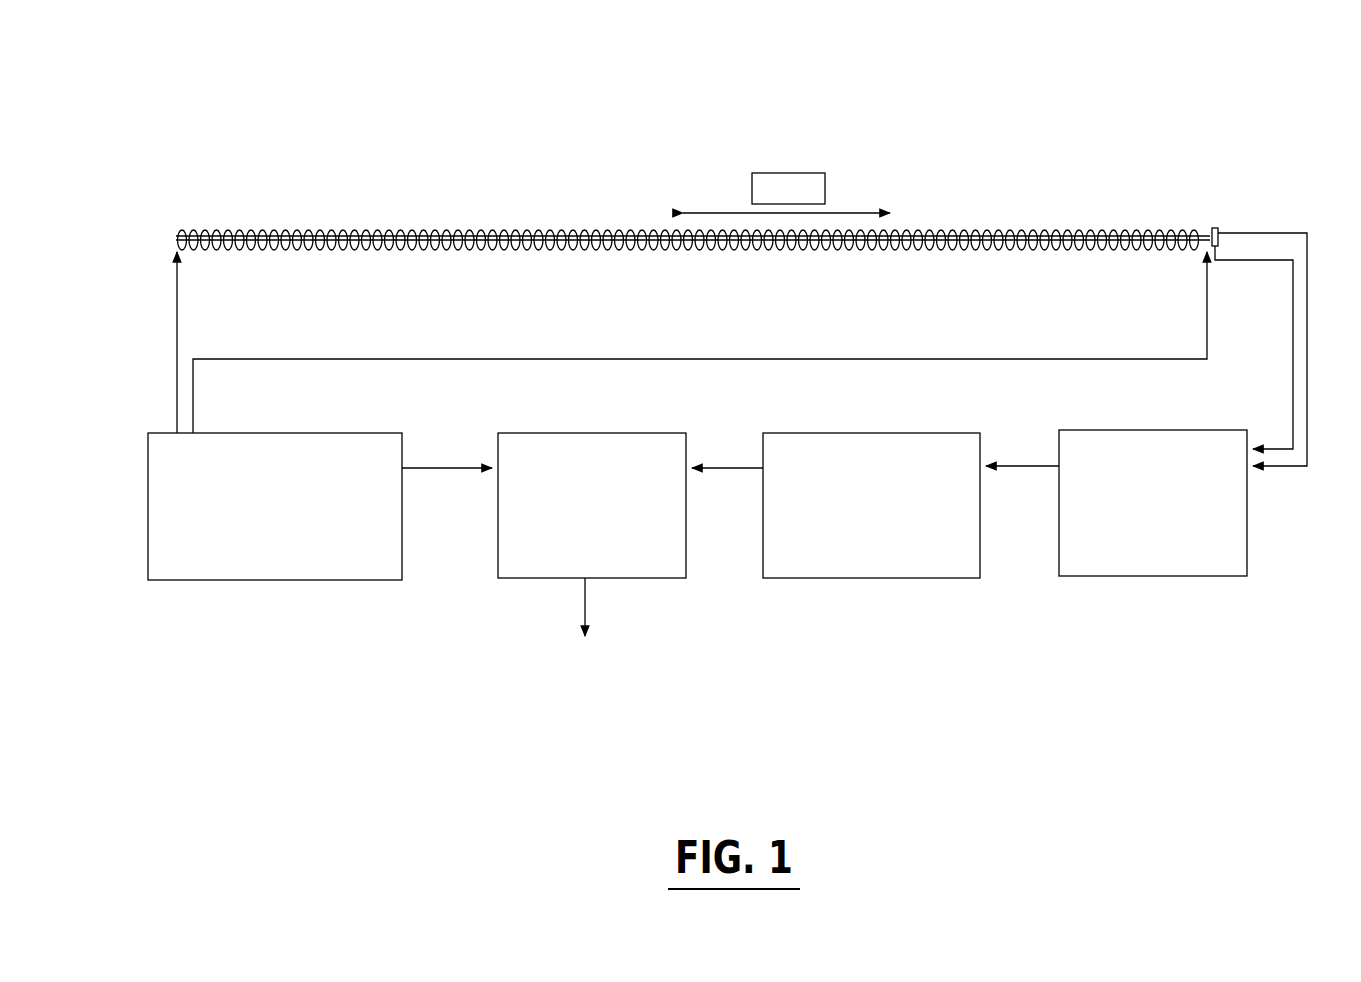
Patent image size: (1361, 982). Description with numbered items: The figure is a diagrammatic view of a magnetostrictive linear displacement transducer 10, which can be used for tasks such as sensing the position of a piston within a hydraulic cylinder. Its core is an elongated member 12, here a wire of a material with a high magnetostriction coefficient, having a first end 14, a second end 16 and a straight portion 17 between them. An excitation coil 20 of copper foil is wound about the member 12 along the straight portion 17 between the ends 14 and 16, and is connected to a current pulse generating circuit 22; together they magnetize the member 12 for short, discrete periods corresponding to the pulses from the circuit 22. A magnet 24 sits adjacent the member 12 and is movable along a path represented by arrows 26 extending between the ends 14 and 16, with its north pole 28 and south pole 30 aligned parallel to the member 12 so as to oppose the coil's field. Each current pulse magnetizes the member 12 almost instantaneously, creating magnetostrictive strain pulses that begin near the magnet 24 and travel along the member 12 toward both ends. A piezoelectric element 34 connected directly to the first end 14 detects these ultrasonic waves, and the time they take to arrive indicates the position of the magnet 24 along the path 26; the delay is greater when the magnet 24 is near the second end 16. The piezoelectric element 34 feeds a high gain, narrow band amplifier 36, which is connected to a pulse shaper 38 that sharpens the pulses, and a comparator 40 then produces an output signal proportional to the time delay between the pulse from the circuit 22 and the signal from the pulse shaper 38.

The magnetostrictive linear displacement transducer 10 is at (1012, 166).
The elongated member 12 is at (693, 283).
The first end 14 is at (1214, 228).
The second end 16 is at (177, 235).
The straight portion 17 is at (702, 247).
The excitation coil 20 is at (420, 247).
The current pulse generating circuit 22 is at (203, 433).
The magnet 24 is at (790, 129).
The arrows 26 is at (855, 212).
The north pole 28 is at (752, 192).
The south pole 30 is at (828, 192).
The piezoelectric element 34 is at (1220, 234).
The amplifier 36 is at (1188, 430).
The pulse shaper 38 is at (862, 433).
The comparator 40 is at (586, 433).